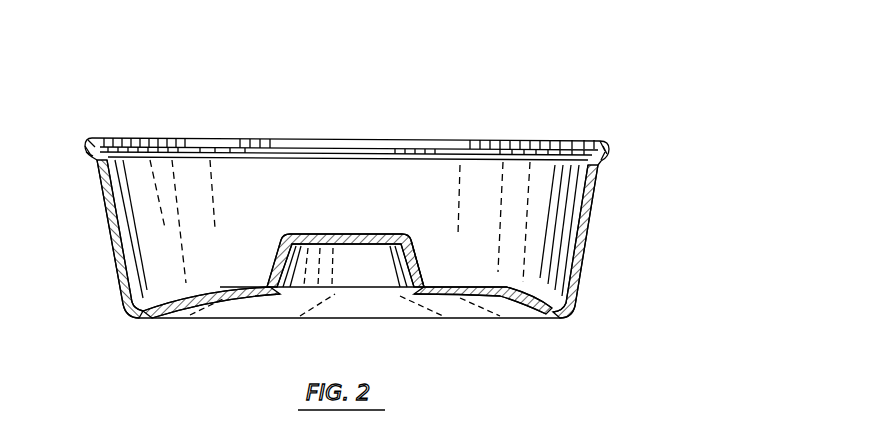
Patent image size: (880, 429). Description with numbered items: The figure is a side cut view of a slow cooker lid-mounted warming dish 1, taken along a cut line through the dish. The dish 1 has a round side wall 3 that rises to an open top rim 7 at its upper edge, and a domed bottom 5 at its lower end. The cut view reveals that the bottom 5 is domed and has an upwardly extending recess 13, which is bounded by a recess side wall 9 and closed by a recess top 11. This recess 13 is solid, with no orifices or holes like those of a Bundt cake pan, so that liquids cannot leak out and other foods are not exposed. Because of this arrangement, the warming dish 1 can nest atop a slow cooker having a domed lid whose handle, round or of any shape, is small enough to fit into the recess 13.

The slow cooker lid-mounted warming dish 1 is at (347, 219).
The round side wall 3 is at (390, 198).
The domed bottom 5 is at (487, 303).
The open top rim 7 is at (567, 140).
The recess side wall 9 is at (324, 283).
The recess top 11 is at (348, 236).
The upwardly extending recess 13 is at (424, 247).